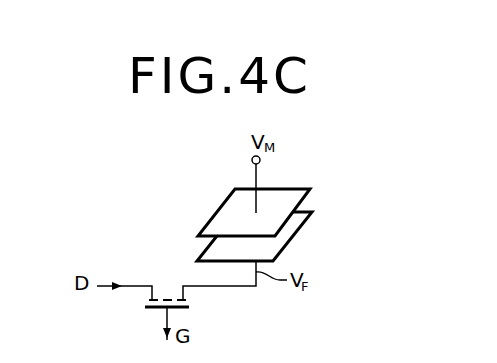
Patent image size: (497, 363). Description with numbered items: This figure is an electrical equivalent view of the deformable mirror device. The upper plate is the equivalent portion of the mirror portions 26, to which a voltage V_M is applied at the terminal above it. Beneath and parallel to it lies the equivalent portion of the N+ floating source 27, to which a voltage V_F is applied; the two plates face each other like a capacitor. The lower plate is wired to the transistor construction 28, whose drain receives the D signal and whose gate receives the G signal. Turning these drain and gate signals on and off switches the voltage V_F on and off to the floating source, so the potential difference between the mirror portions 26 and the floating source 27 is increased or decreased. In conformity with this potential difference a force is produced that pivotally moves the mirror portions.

The equivalent portion of the mirror portions 26 is at (290, 198).
The equivalent portion of the N+ floating source 27 is at (290, 230).
The transistor construction 28 is at (189, 302).